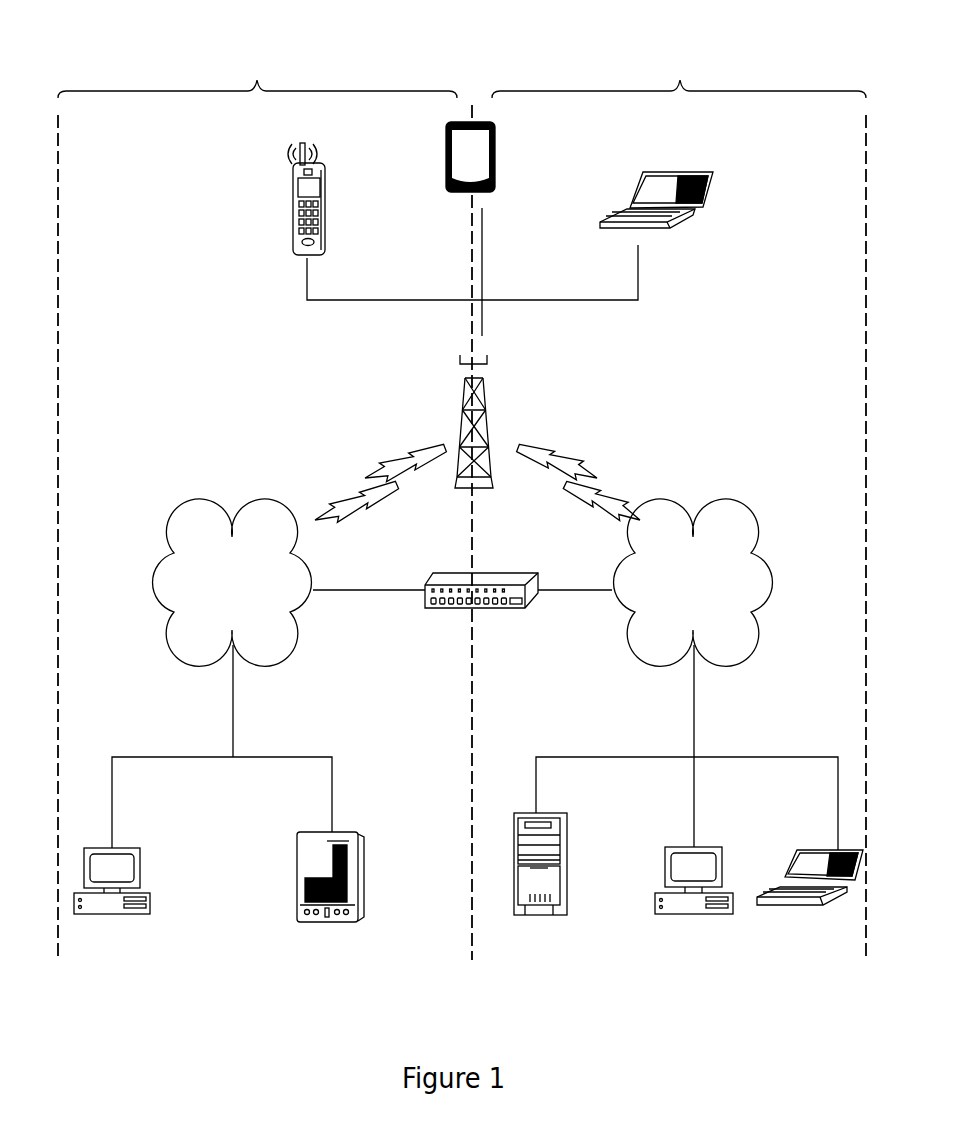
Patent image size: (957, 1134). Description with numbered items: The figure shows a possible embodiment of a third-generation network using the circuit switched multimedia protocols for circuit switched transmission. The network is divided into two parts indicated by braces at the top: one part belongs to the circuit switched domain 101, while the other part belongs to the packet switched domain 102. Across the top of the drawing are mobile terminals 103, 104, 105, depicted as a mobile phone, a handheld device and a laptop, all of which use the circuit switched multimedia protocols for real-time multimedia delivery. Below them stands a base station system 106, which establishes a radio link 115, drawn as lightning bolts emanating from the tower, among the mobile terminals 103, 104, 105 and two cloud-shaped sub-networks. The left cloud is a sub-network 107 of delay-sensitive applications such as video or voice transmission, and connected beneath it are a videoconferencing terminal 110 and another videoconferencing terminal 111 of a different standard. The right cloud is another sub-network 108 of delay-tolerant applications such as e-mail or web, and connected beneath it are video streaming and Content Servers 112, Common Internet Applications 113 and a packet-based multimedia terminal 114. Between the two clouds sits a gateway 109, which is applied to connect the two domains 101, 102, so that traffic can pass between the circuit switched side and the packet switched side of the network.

The circuit switched domain 101 is at (260, 63).
The packet switched domain 102 is at (683, 63).
The mobile terminal 103 is at (280, 157).
The mobile terminal 104 is at (482, 118).
The mobile terminal 105 is at (683, 172).
The base station system 106 is at (481, 380).
The sub-network 107 is at (242, 520).
The sub-network 108 is at (702, 517).
The gateway 109 is at (482, 572).
The H.324 terminal 110 is at (130, 847).
The H.320 terminal 111 is at (350, 830).
The video streaming and Content Server 112 is at (555, 922).
The Common Internet Application 113 is at (722, 922).
The H.323/SIP terminal 114 is at (828, 905).
The radio link 115 is at (372, 463).